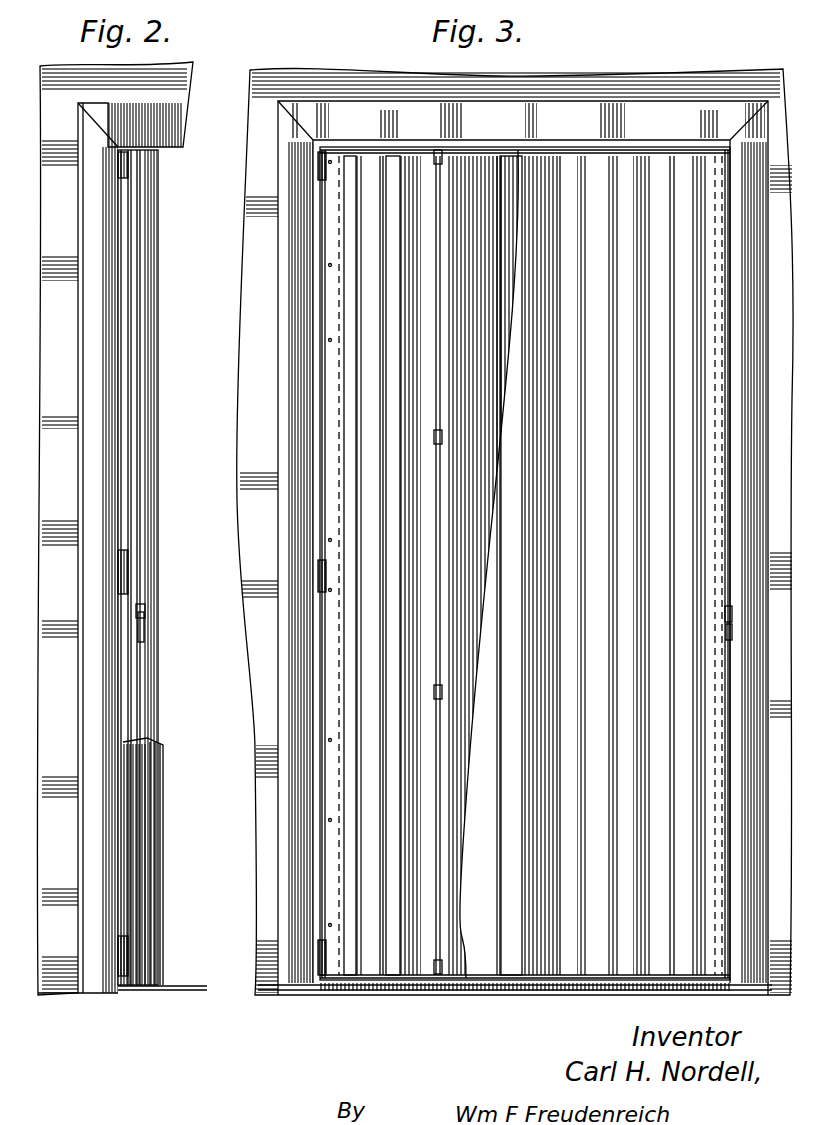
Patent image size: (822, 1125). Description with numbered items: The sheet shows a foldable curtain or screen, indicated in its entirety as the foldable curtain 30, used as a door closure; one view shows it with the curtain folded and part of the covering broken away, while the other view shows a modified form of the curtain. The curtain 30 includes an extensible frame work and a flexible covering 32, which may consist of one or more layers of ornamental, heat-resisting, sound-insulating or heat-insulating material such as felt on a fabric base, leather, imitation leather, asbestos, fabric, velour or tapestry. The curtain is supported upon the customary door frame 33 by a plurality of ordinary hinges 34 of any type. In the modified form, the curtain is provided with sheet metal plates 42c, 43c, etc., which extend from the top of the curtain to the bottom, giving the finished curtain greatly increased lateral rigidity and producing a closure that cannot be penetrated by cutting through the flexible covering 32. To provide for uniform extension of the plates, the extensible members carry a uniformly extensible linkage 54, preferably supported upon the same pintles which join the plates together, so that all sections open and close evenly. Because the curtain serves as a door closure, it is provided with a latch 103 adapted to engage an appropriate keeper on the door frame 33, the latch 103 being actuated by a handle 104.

In FIG. 2, the foldable curtain 30 is at (163, 850).
In FIG. 3, the foldable curtain 30 is at (652, 912).
In FIG. 3, the flexible covering 32 is at (514, 565).
In FIG. 2, the door frame 33 is at (95, 497).
In FIG. 3, the door frame 33 is at (752, 556).
In FIG. 2, the hinges 34 is at (152, 163).
In FIG. 3, the hinges 34 is at (318, 160).
In FIG. 3, the sheet metal plate 42c is at (352, 254).
In FIG. 3, the sheet metal plate 43c is at (397, 317).
In FIG. 3, the uniformly extensible linkage 54 is at (482, 150).
In FIG. 2, the latch 103 is at (146, 612).
In FIG. 3, the latch 103 is at (728, 614).
In FIG. 2, the handle 104 is at (144, 636).
In FIG. 3, the handle 104 is at (729, 636).